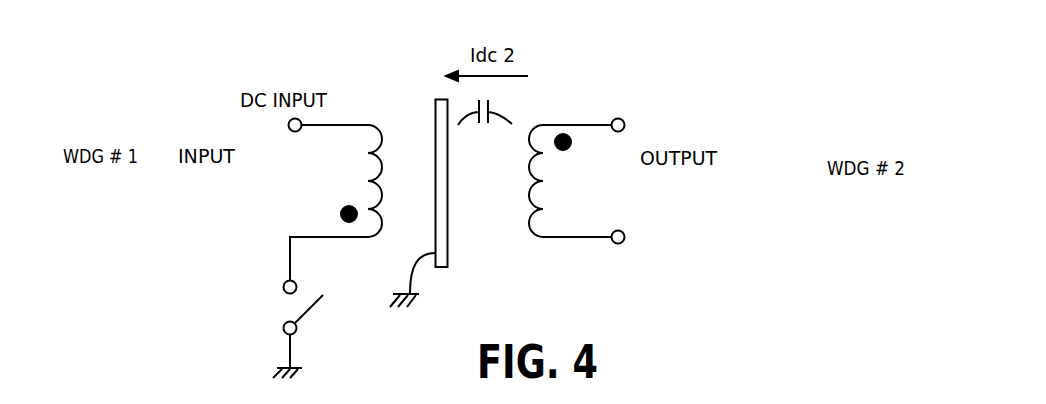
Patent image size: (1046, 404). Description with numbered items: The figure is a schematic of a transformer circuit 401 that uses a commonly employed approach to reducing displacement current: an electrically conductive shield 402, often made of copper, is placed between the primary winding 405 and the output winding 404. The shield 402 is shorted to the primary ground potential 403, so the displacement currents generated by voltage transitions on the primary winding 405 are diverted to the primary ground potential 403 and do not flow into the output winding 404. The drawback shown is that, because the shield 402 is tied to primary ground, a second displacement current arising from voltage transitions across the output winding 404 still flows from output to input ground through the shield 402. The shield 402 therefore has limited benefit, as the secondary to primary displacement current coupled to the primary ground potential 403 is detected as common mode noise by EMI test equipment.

The transformer circuit 401 is at (660, 80).
The electrically conductive shield 402 is at (440, 204).
The primary ground potential 403 is at (280, 330).
The output winding 404 is at (577, 181).
The primary winding 405 is at (336, 200).